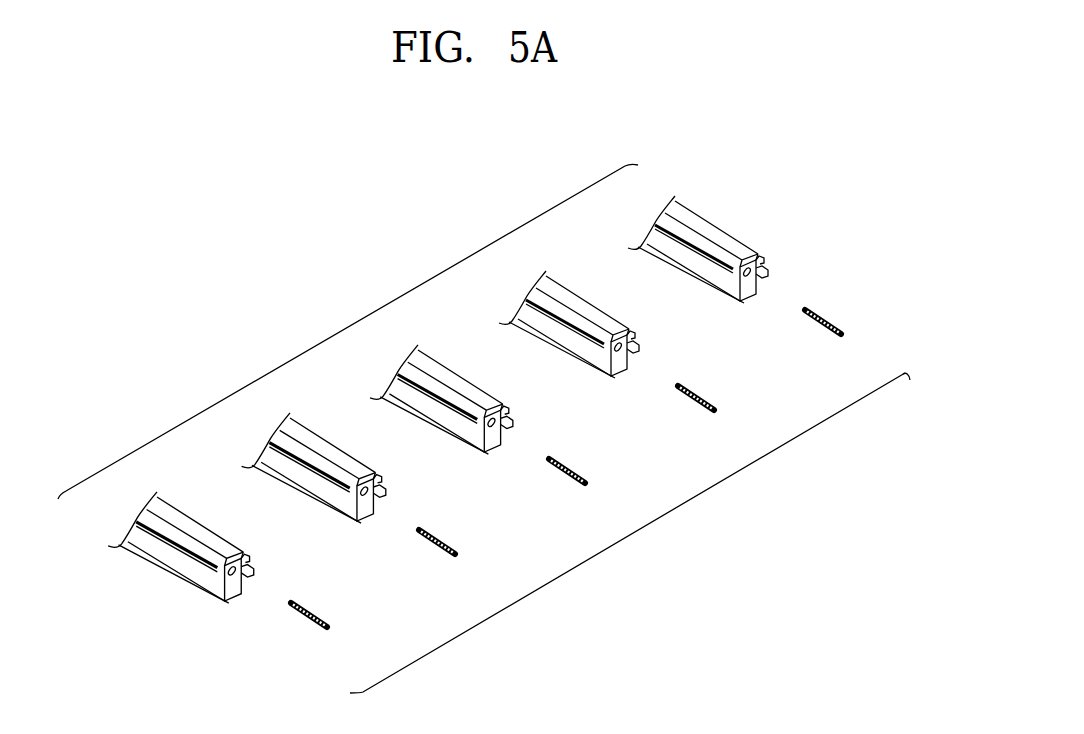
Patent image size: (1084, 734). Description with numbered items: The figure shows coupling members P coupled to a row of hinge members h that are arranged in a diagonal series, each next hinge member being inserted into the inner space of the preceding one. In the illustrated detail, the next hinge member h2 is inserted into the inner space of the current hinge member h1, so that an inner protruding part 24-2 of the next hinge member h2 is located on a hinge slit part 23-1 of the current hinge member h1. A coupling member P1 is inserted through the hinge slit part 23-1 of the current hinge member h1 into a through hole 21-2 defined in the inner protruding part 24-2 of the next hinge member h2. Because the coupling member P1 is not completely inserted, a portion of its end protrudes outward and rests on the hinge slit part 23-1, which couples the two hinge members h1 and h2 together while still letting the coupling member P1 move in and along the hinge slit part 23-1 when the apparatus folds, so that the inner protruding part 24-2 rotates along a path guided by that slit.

The coupling members P is at (650, 534).
The coupling member P1 is at (460, 555).
The hinge members h is at (357, 323).
The current hinge member h1 is at (280, 438).
The next hinge member h2 is at (150, 511).
The inner protruding part 24-2 is at (243, 553).
The hinge slit part 23-1 is at (361, 500).
The through hole 21-2 is at (249, 577).